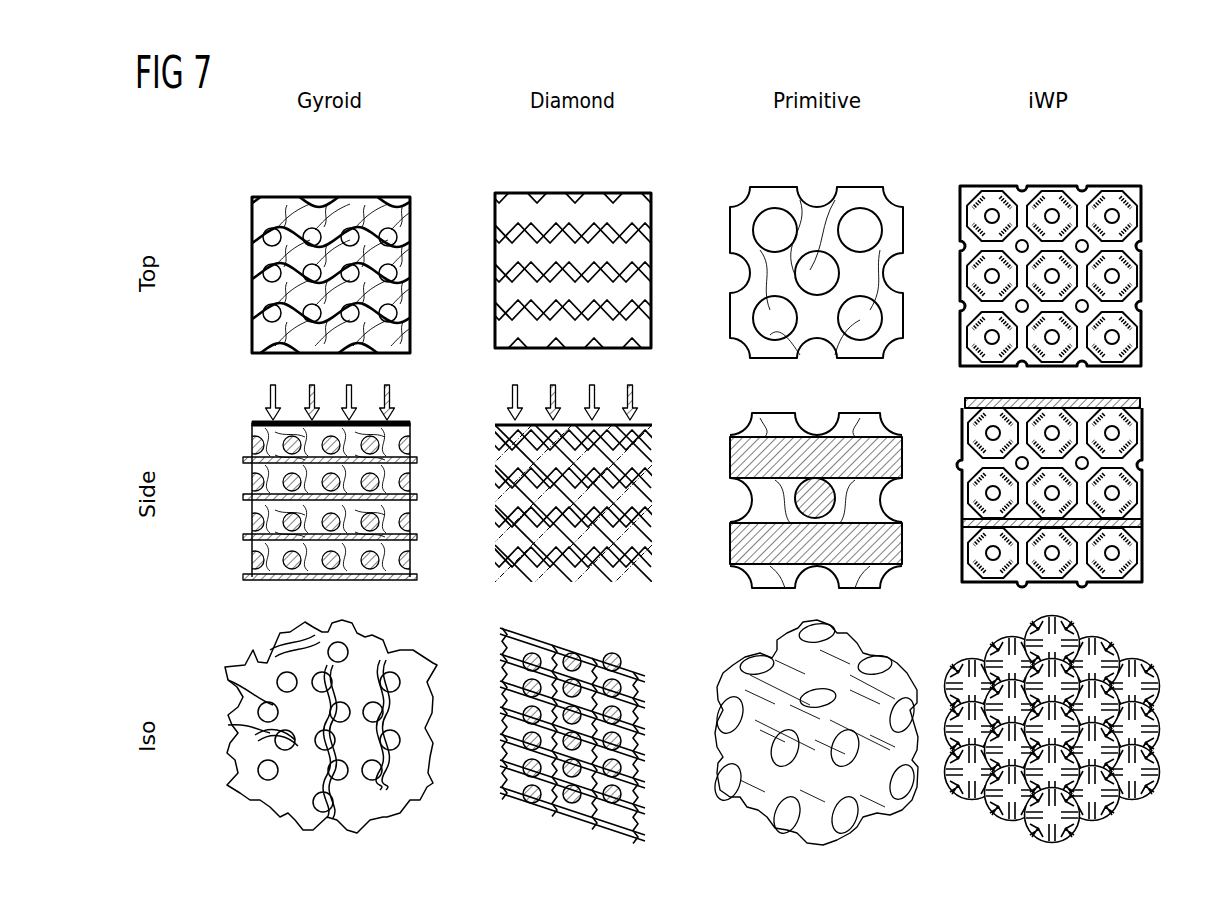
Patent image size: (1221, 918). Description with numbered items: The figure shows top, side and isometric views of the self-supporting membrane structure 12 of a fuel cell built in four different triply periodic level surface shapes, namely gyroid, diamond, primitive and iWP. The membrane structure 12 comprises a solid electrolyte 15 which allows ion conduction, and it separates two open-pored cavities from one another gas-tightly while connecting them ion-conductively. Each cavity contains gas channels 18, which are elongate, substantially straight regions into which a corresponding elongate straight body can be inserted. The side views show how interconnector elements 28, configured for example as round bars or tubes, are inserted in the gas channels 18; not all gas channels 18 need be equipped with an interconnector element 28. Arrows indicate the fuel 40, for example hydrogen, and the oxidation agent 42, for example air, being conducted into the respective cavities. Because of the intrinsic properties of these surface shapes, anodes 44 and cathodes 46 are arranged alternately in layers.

The membrane structure 12 is at (265, 190).
The solid electrolyte 15 is at (375, 200).
The gas channel 18 is at (252, 247).
The interconnector element 28 is at (415, 446).
The fuel 40 is at (394, 389).
The oxidation agent 42 is at (281, 389).
The anode 44 is at (245, 446).
The cathode 46 is at (245, 482).